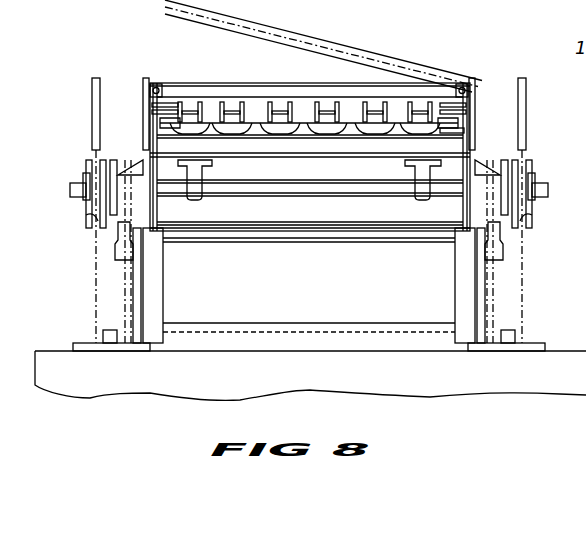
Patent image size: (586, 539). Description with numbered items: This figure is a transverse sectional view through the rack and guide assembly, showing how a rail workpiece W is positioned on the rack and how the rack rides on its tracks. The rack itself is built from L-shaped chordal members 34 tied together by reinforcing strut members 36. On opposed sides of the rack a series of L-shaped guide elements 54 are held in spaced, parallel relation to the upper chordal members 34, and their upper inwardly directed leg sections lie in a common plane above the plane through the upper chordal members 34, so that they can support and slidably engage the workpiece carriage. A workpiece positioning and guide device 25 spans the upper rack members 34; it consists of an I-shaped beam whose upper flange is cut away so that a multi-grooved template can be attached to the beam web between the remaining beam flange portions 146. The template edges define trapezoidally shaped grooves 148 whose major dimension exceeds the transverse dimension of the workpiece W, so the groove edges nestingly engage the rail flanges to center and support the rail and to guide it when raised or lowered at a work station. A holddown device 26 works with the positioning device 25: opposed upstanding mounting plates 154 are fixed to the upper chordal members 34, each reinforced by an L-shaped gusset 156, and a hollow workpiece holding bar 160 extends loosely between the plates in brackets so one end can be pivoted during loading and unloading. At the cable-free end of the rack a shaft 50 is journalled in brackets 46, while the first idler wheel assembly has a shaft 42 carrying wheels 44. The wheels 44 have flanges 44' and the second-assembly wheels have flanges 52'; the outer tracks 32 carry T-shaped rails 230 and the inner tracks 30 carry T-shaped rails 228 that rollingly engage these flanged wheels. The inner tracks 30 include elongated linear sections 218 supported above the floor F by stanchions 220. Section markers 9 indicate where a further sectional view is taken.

The hollow workpiece holding bar 160 is at (343, 87).
The holddown device 26 is at (290, 90).
The workpiece W is at (300, 106).
The section line 9 is at (262, 110).
The mounting plate 154 is at (143, 90).
The reinforcing strut member 36 is at (302, 157).
The shaft 50 is at (322, 188).
The workpiece positioning and guide device 25 is at (330, 157).
The bracket 46 is at (200, 195).
The trapezoidally shaped groove 148 is at (184, 122).
The beam flange portion 146 is at (160, 128).
The L-shaped guide element 54 is at (152, 112).
The L-shaped gusset 156 is at (470, 137).
The outer track 32 is at (92, 100).
The inner track 30 is at (130, 304).
The wheel 44 is at (291, 175).
The flange 44' is at (305, 176).
The shaft 42 is at (72, 190).
The T-shaped rail 230 is at (100, 224).
The T-shaped rail 228 is at (120, 232).
The stanchion 220 is at (125, 262).
The elongated linear section 218 is at (113, 262).
The L-shaped chordal member 34 is at (162, 277).
The flange 52' is at (317, 282).
The floor F is at (304, 352).